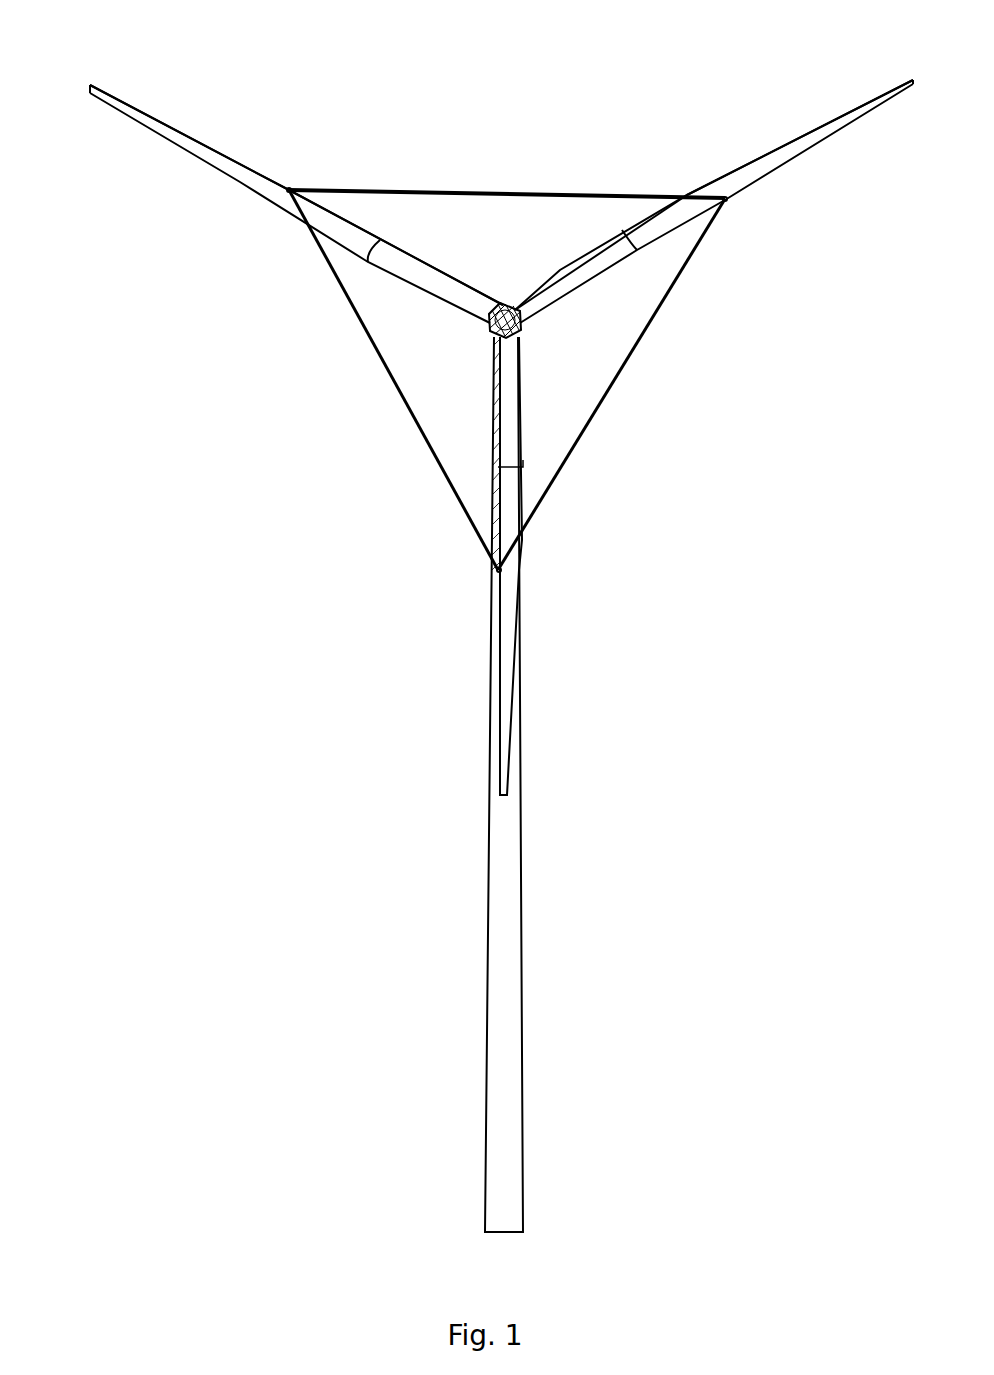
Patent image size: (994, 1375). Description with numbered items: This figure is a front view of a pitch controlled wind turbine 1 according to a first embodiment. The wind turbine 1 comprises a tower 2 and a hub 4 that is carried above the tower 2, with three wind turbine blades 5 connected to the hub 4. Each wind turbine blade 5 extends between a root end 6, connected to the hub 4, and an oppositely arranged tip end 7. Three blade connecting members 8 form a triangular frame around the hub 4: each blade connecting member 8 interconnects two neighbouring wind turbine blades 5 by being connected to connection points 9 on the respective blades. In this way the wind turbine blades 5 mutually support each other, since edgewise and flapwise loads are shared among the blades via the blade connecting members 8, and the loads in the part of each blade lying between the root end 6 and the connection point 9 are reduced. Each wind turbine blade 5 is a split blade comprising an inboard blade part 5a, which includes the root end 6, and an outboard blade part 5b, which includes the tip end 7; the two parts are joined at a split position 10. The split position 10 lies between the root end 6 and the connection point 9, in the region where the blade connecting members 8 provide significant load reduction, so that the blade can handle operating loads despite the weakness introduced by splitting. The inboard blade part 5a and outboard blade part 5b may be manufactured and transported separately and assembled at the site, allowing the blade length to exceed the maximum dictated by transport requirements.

The pitch controlled wind turbine 1 is at (226, 553).
The tower 2 is at (497, 898).
The hub 4 is at (505, 307).
The wind turbine blade 5 is at (237, 185).
The inboard blade part 5a is at (433, 285).
The outboard blade part 5b is at (165, 127).
The root end 6 is at (490, 320).
The tip end 7 is at (90, 85).
The blade connecting member 8 is at (437, 189).
The connection point 9 is at (289, 190).
The split position 10 is at (368, 262).